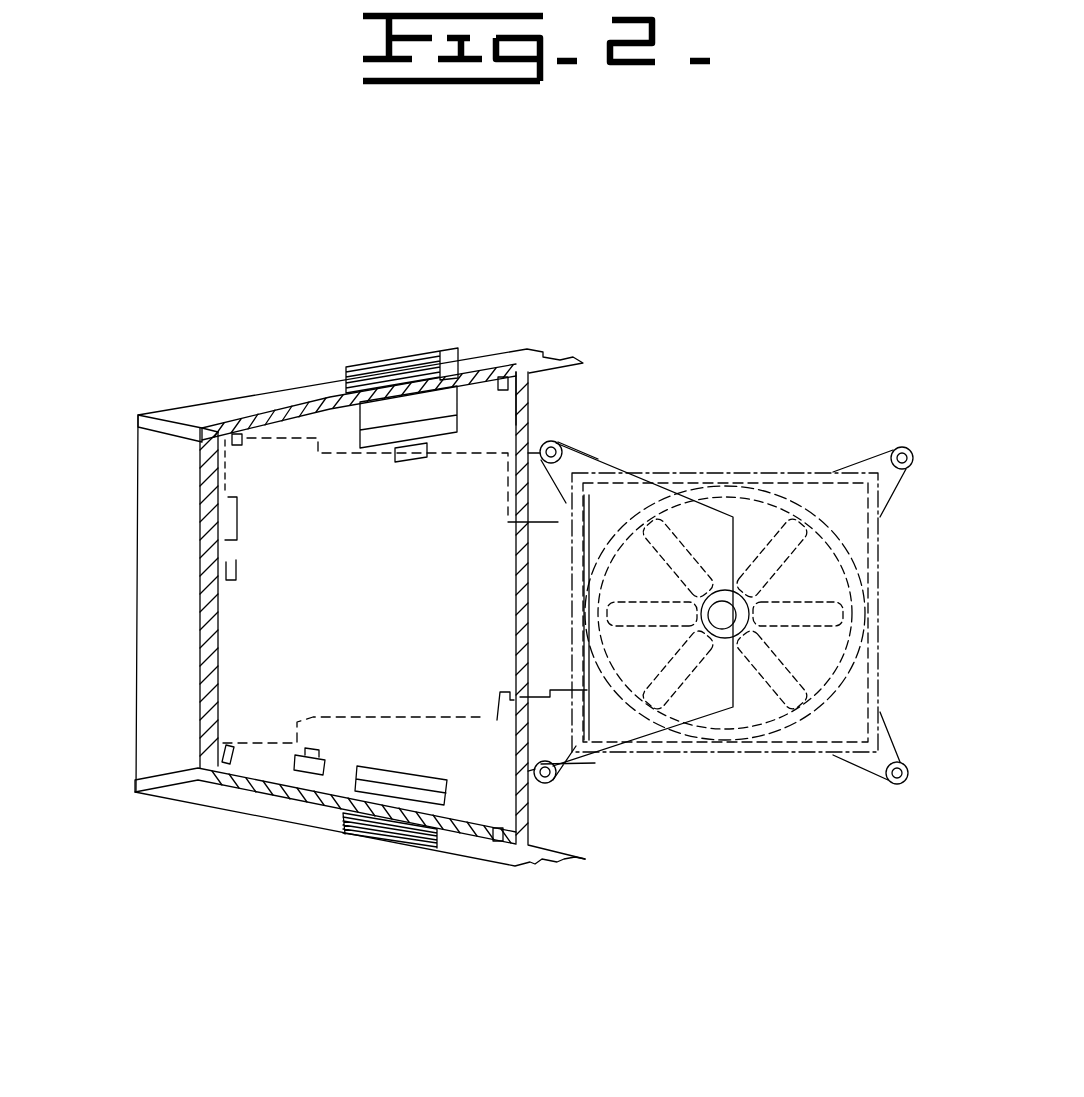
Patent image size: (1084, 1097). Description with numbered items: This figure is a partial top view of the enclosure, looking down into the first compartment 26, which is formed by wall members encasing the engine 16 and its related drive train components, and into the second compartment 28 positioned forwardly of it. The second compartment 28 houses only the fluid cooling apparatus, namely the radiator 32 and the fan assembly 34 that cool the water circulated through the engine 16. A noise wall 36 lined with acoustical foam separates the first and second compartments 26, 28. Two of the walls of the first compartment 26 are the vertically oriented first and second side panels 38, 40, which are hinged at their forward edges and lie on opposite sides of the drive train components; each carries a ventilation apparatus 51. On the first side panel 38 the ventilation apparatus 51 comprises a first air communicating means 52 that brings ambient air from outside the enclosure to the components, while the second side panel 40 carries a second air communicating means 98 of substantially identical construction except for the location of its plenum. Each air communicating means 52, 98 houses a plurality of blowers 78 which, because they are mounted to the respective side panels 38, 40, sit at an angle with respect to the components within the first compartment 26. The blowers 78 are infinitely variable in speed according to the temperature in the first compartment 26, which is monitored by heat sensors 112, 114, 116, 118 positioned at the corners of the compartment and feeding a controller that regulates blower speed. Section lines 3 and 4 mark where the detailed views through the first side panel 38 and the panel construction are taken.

The section line 3- 3 is at (193, 835).
The section line 4- 4 is at (203, 373).
The engine 16 is at (218, 540).
The first compartment 26 is at (228, 428).
The second compartment 28 is at (529, 388).
The radiator 32 is at (687, 470).
The fan assembly 34 is at (750, 477).
The noise wall 36 is at (516, 549).
The first side panel 38 is at (217, 808).
The second side panel 40 is at (307, 384).
The ventilation apparatus 51 is at (385, 462).
The first air communicating means 52 is at (420, 773).
The blowers 78 is at (443, 453).
The second air communicating means 98 is at (458, 376).
The heat sensor 112 is at (238, 438).
The heat sensor 114 is at (529, 407).
The heat sensor 116 is at (518, 830).
The heat sensor 118 is at (230, 742).